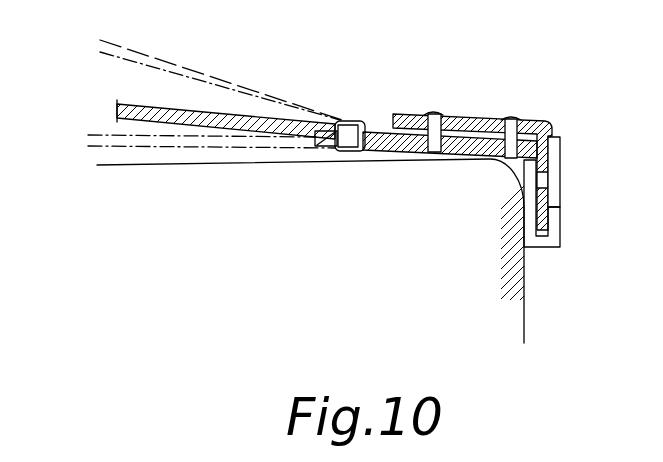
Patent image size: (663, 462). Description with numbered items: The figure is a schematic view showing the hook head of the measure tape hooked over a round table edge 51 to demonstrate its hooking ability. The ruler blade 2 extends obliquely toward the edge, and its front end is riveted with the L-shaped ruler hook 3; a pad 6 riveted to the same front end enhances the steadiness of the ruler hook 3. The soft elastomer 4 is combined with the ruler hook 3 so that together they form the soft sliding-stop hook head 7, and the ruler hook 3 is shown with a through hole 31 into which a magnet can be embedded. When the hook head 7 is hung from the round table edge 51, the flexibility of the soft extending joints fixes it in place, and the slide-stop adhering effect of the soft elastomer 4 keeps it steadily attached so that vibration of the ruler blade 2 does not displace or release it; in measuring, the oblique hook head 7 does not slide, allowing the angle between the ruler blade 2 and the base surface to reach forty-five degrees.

The ruler blade 2 is at (279, 118).
The ruler hook 3 is at (481, 117).
The soft elastomer 4 is at (560, 224).
The pad 6 is at (405, 151).
The hook head 7 is at (583, 113).
The through hole 31 is at (557, 187).
The round table edge 51 is at (521, 312).